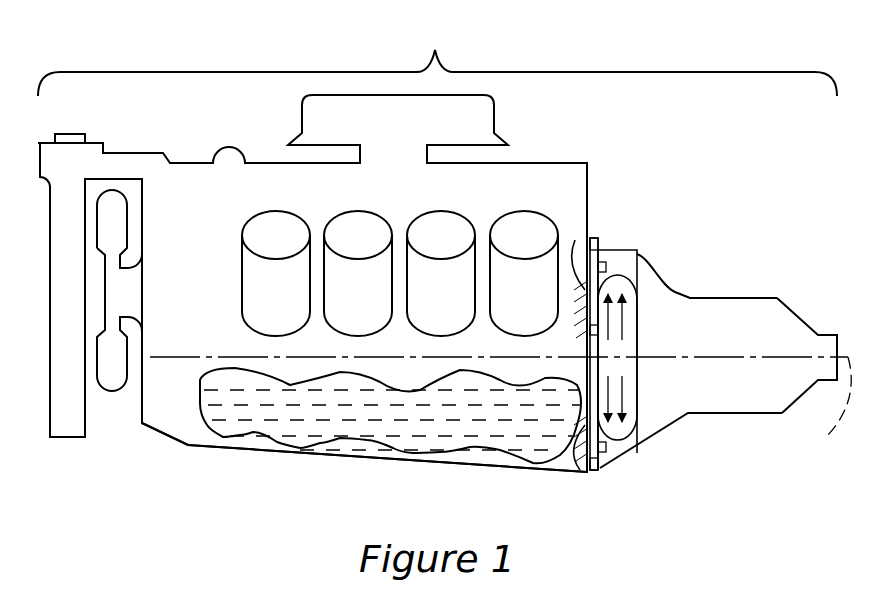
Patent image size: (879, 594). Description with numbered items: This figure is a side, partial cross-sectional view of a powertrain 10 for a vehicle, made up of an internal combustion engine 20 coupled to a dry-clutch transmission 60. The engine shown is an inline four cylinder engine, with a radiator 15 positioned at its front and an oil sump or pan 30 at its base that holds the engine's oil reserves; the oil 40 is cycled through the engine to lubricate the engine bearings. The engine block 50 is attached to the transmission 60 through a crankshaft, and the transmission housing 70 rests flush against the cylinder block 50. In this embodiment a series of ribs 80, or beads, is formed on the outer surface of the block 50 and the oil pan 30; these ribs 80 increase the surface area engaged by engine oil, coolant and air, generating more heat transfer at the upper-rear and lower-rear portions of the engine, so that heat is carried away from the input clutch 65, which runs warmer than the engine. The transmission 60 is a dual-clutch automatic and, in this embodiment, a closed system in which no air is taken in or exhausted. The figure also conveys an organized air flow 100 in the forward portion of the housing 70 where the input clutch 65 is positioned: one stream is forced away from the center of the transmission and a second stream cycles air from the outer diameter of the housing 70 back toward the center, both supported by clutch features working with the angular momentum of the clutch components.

The powertrain 10 is at (437, 60).
The radiator 15 is at (60, 323).
The internal combustion engine 20 is at (190, 176).
The oil sump (or pan) 30 is at (176, 428).
The oil 40 is at (467, 422).
The engine block 50 is at (543, 188).
The transmission 60 is at (770, 312).
The input clutch 65 is at (630, 368).
The transmission housing 70 is at (680, 296).
The ribs 80 is at (575, 240).
The air flow 100 is at (638, 263).